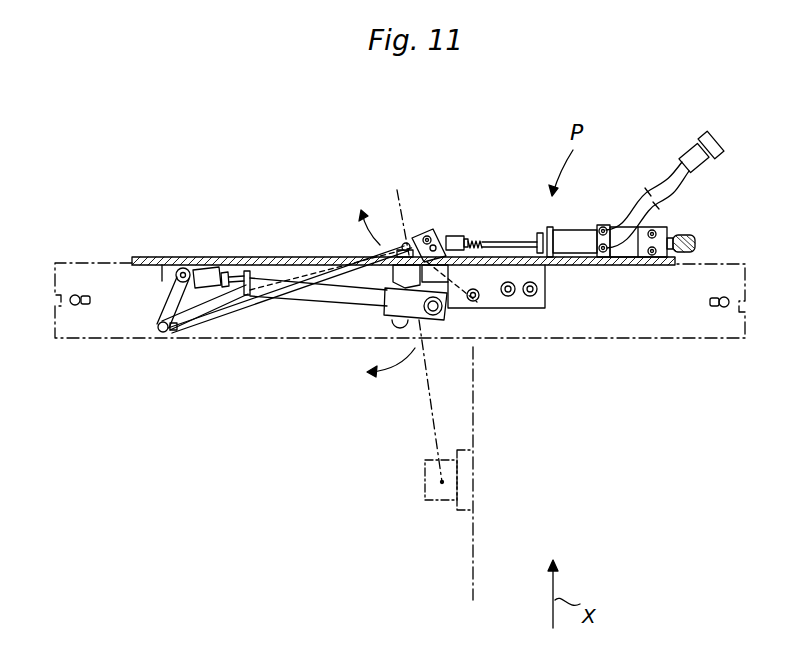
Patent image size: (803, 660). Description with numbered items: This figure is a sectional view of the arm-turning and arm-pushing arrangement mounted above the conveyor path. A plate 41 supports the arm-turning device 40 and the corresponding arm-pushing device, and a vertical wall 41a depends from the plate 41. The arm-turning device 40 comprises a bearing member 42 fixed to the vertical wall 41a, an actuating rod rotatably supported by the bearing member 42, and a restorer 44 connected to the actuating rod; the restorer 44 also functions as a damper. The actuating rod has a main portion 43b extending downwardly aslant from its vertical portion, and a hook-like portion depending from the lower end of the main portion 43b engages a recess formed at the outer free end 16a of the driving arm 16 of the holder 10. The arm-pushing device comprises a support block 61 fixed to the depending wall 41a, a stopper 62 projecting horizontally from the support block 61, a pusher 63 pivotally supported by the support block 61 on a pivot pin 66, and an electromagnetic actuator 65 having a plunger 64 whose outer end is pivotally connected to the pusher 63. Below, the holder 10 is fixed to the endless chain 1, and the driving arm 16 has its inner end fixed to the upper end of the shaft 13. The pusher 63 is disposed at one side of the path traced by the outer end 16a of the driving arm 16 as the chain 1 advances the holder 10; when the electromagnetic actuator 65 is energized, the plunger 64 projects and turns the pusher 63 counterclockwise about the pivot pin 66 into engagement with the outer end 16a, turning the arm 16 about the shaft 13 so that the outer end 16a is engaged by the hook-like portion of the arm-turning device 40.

The endless chain 1 is at (473, 558).
The holder 10 is at (440, 516).
The shaft 13 is at (442, 481).
The driving arm 16 is at (428, 392).
The recess on outer free end of driving arm 16a is at (404, 213).
The arm-turning device 40 is at (198, 352).
The plate 41 is at (607, 340).
The vertical wall 41a is at (258, 257).
The bearing member 42 is at (163, 282).
The main portion of actuating rod 43b is at (222, 312).
The restorer 44 is at (334, 283).
The support block 61 is at (524, 306).
The stopper 62 is at (397, 268).
The pusher 63 is at (446, 238).
The plunger 64 is at (507, 243).
The electromagnetic actuator 65 is at (584, 216).
The pivot pin 66 is at (476, 302).